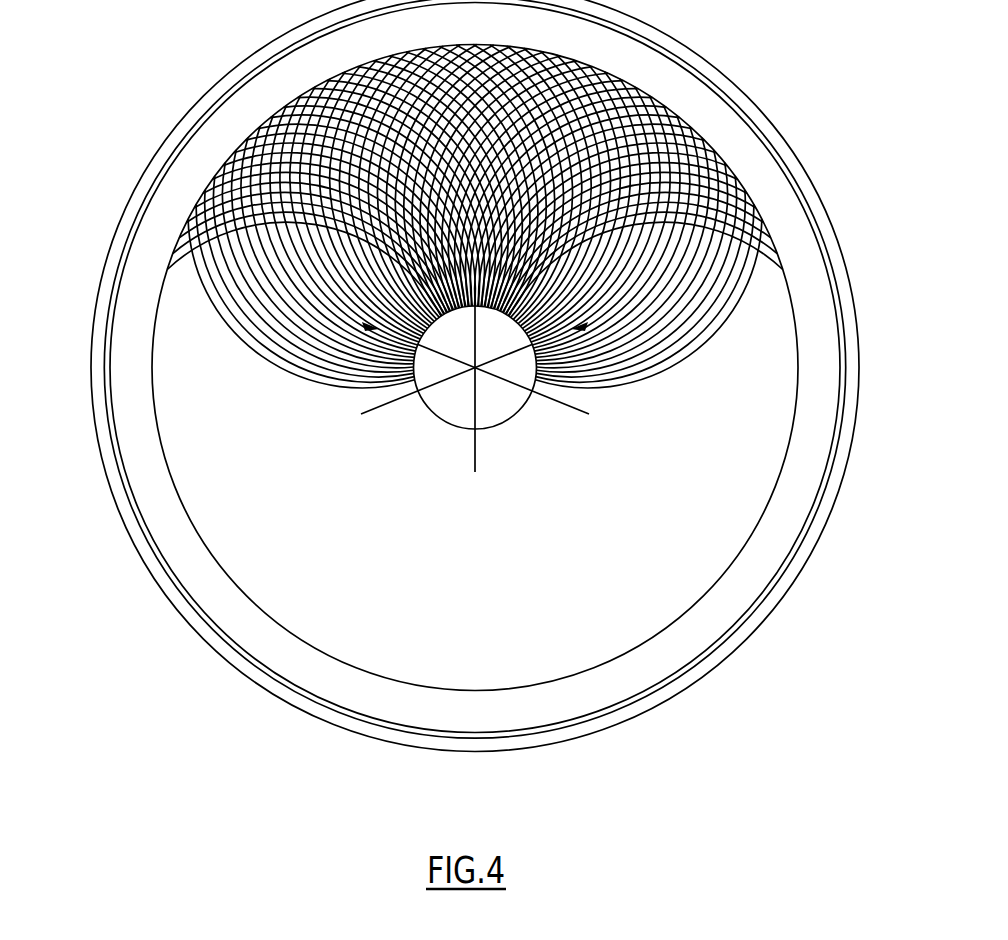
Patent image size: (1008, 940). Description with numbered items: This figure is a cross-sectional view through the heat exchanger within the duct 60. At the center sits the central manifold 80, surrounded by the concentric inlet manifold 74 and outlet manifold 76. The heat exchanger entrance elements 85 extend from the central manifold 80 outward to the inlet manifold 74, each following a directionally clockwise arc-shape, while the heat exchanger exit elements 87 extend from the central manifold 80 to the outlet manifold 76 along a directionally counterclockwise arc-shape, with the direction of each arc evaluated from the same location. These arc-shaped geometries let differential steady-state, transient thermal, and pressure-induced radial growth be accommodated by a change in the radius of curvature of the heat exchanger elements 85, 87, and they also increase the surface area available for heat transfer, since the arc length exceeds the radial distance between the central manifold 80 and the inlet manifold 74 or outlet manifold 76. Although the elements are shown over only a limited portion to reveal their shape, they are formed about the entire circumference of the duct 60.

The duct 60 is at (113, 240).
The inlet manifold 74 is at (758, 573).
The outlet manifold 76 is at (497, 368).
The central manifold 80 is at (462, 396).
The heat exchanger entrance elements 85 is at (669, 378).
The heat exchanger exit elements 87 is at (281, 378).